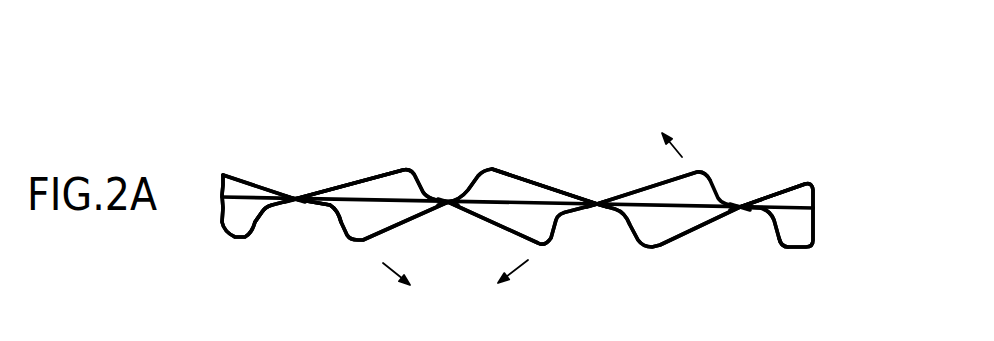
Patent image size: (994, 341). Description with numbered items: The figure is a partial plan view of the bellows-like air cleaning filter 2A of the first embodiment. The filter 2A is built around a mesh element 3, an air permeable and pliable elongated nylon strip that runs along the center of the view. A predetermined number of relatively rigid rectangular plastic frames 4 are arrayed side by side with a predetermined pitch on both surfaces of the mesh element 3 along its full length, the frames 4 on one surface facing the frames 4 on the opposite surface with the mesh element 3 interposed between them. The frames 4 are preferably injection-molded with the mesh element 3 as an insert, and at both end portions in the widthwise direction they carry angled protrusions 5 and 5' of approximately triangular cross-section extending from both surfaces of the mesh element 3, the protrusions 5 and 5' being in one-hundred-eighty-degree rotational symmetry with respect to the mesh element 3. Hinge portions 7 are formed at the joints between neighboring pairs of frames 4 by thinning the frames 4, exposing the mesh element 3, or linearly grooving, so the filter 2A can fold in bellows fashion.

The bellows-like air cleaning filter 2A is at (697, 111).
The mesh element 3 is at (660, 205).
The plastic frames 4 is at (248, 172).
The angled protrusion 5 is at (563, 255).
The angled protrusion 5' is at (589, 143).
The hinge portions 7 is at (598, 203).